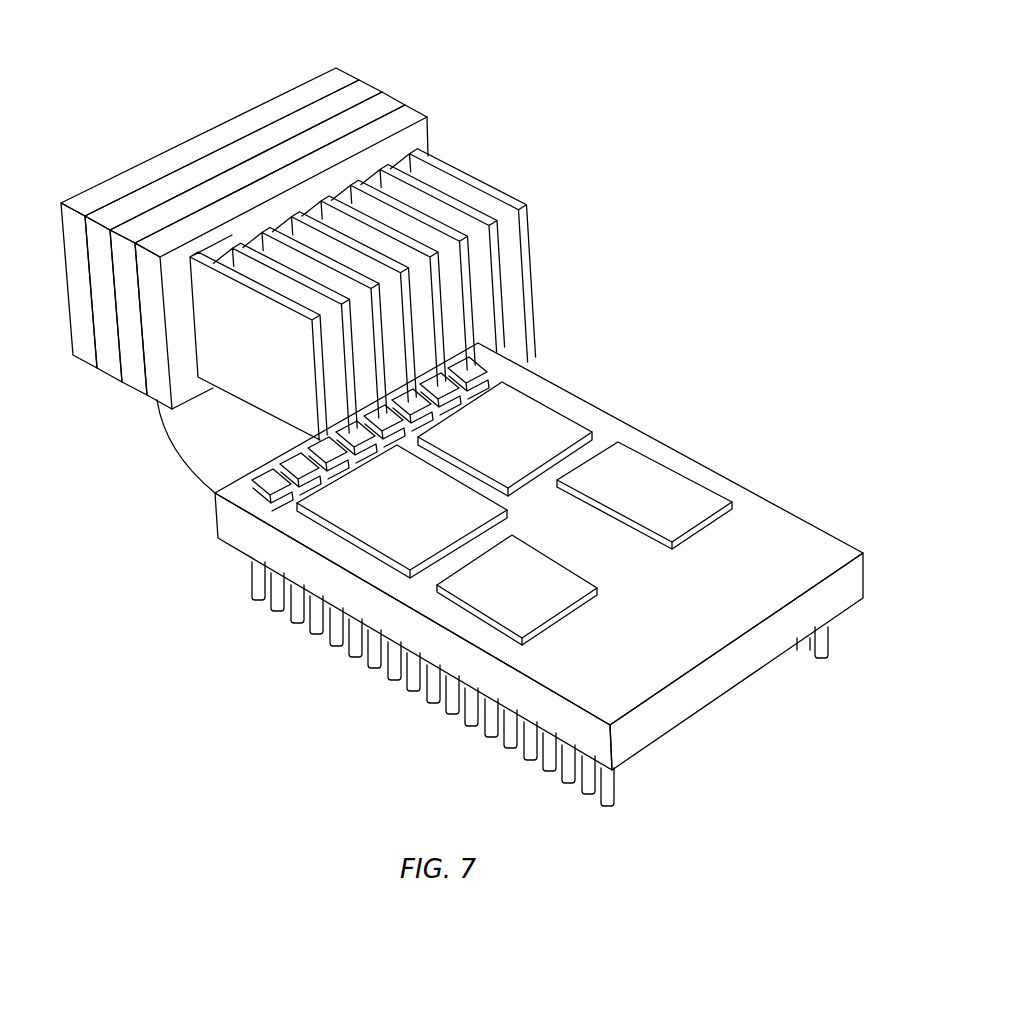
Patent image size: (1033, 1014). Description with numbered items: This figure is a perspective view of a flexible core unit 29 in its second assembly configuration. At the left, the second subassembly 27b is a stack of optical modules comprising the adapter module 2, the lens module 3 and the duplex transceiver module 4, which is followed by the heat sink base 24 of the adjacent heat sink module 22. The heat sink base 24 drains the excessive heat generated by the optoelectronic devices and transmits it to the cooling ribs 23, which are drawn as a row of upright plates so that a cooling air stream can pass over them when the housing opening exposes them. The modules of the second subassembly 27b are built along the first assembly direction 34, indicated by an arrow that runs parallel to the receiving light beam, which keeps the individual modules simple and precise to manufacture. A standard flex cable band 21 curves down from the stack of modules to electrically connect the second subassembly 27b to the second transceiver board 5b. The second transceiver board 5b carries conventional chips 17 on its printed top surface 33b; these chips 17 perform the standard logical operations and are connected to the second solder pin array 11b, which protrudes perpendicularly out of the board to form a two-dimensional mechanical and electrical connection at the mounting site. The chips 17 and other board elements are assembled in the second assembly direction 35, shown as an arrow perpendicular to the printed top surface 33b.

The adapter module 2 is at (338, 78).
The lens module 3 is at (363, 85).
The duplex transceiver module 4 is at (387, 98).
The heat sink base 24 is at (412, 112).
The second subassembly 27b is at (378, 16).
The flexible core unit 29 is at (876, 272).
The heat sink module 22 is at (367, 281).
The cooling ribs 23 is at (487, 193).
The first assembly direction 34 is at (38, 135).
The second assembly direction 35 is at (632, 267).
The chips 17 is at (527, 420).
The flex cable band 21 is at (174, 451).
The printed top surface 33b is at (551, 556).
The second transceiver board 5b is at (832, 608).
The second solder pin array 11b is at (833, 662).